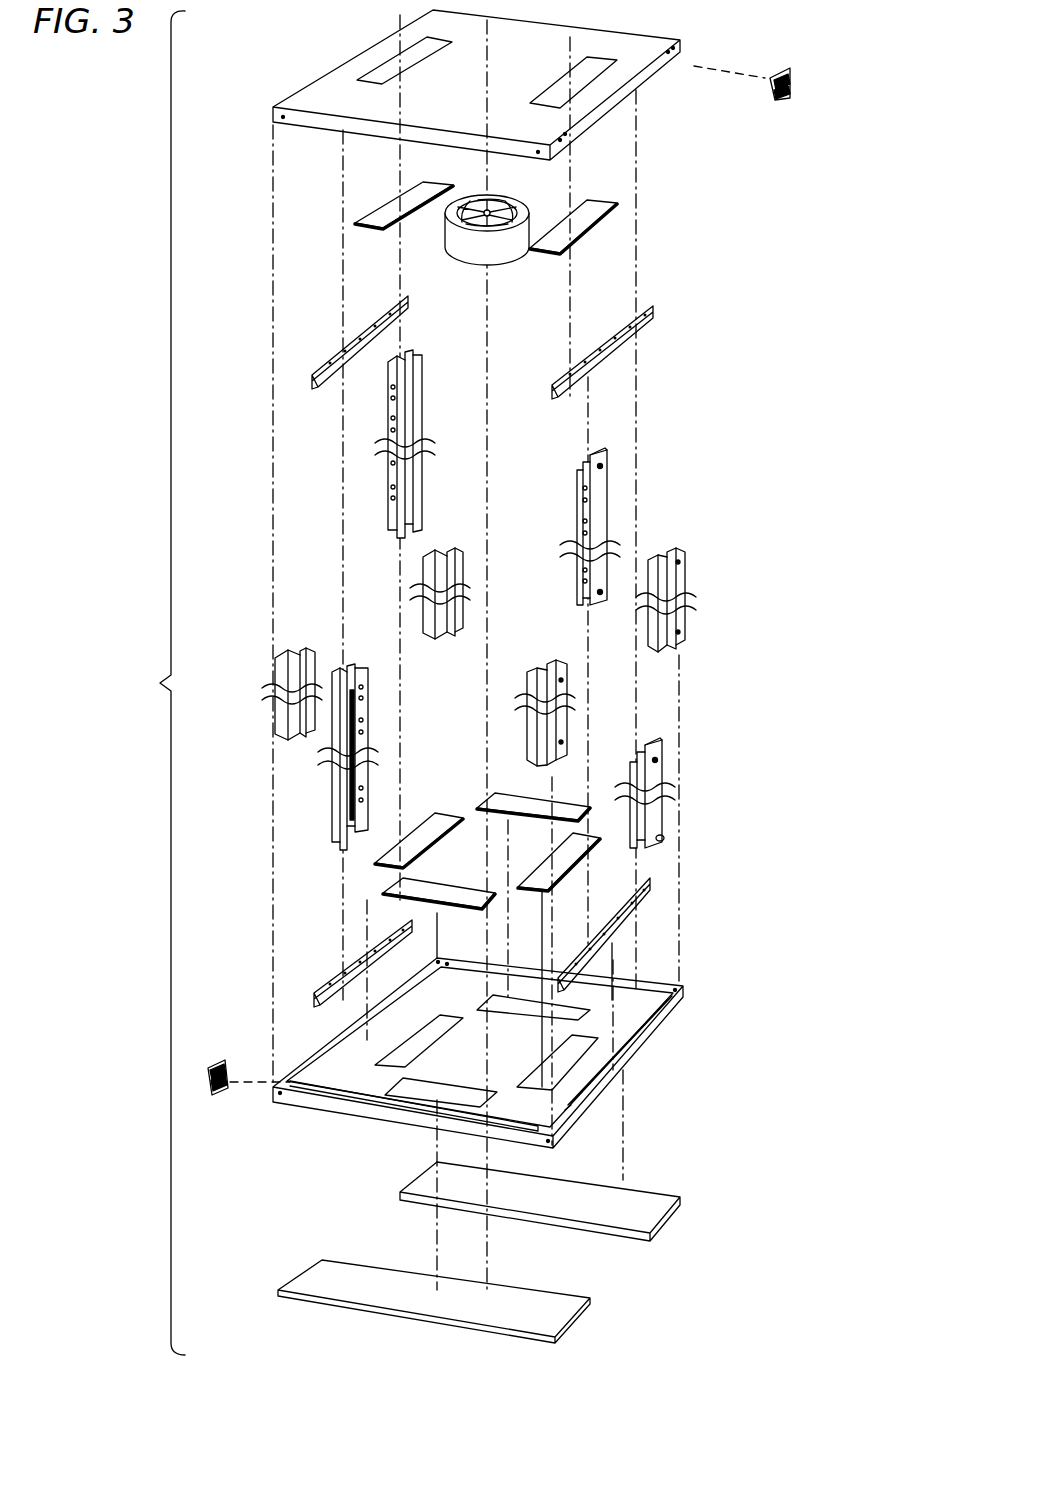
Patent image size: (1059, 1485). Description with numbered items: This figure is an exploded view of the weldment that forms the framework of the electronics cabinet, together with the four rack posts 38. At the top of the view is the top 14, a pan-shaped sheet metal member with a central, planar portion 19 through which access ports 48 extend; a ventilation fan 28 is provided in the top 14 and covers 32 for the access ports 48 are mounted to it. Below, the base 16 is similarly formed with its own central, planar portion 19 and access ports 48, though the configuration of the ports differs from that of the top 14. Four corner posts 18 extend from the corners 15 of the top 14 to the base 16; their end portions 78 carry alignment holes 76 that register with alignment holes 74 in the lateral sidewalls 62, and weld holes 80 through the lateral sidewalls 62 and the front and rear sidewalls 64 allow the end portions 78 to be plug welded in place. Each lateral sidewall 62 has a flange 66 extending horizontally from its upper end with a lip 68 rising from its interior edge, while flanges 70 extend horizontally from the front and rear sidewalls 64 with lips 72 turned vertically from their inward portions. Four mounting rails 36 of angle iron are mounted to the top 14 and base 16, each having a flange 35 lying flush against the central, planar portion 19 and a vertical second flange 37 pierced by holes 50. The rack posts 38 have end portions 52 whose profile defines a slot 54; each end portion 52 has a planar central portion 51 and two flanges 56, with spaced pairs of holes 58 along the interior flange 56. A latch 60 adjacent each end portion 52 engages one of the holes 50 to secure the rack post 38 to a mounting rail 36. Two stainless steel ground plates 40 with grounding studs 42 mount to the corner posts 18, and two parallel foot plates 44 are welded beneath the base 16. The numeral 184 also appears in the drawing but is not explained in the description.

The top 14 is at (660, 45).
The corners 15 is at (433, 12).
The base 16 is at (302, 1111).
The corner posts 18 is at (460, 578).
The central, planar portion 19 is at (548, 36).
The ventilation fan 28 is at (487, 255).
The covers 32 is at (383, 225).
The flange 35 is at (440, 964).
The mounting rails 36 is at (330, 367).
The second flange 37 is at (350, 952).
The rack posts 38 is at (418, 488).
The ground plates 40 is at (775, 100).
The studs 42 is at (793, 85).
The foot plates 44 is at (485, 1292).
The access ports 48 is at (383, 70).
The holes 50 is at (400, 928).
The planar central portion 51 is at (655, 812).
The end portions 52 is at (340, 825).
The slot 54 is at (340, 848).
The flanges 56 is at (363, 710).
The holes 58 is at (366, 735).
The latch 60 is at (660, 757).
The lateral sidewalls 62 is at (355, 1110).
The front and rear sidewalls 64 is at (655, 1025).
The flange 66 is at (328, 1092).
The lip 68 is at (322, 1083).
The flanges 70 is at (628, 1045).
The lips 72 is at (578, 1082).
The alignment holes 74 is at (688, 987).
The alignment holes 76 is at (678, 565).
The end portions 78 is at (678, 585).
The weld holes 80 is at (680, 993).
The lug 184 is at (660, 855).